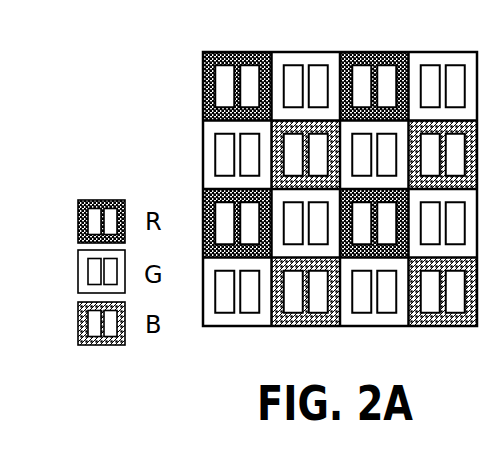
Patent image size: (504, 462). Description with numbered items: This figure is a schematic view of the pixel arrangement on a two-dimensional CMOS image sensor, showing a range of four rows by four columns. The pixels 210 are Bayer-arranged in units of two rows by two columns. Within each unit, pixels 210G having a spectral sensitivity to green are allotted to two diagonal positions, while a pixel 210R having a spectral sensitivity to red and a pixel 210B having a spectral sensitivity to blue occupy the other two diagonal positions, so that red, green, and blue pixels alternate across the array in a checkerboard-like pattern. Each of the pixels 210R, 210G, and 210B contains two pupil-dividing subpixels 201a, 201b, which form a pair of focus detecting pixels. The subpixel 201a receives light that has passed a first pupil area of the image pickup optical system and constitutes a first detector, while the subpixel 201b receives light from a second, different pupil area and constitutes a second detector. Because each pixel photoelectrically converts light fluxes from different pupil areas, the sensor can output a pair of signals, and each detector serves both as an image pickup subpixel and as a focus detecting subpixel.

The pixels 210 is at (100, 65).
The pixel having spectral sensitivity to R (red) 210R is at (203, 83).
The pixels having spectral sensitivity to G (green) 210G is at (203, 131).
The pixel having spectral sensitivity to B (blue) 210B is at (272, 167).
The subpixel 201a is at (292, 65).
The subpixel 201b is at (316, 65).